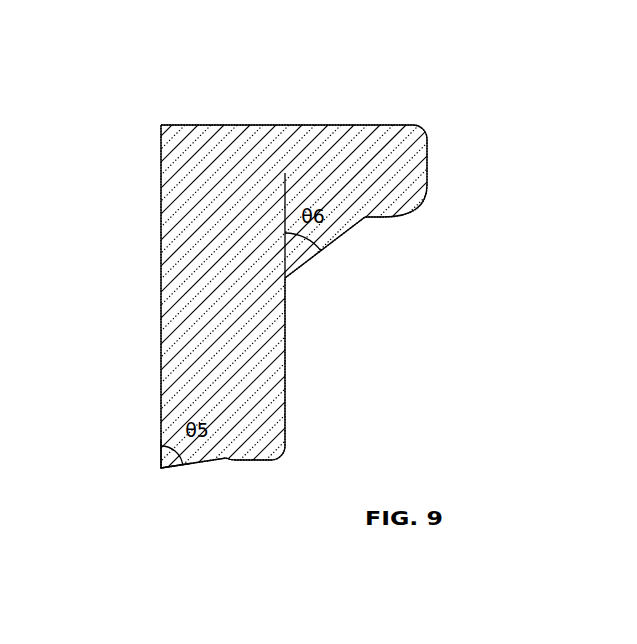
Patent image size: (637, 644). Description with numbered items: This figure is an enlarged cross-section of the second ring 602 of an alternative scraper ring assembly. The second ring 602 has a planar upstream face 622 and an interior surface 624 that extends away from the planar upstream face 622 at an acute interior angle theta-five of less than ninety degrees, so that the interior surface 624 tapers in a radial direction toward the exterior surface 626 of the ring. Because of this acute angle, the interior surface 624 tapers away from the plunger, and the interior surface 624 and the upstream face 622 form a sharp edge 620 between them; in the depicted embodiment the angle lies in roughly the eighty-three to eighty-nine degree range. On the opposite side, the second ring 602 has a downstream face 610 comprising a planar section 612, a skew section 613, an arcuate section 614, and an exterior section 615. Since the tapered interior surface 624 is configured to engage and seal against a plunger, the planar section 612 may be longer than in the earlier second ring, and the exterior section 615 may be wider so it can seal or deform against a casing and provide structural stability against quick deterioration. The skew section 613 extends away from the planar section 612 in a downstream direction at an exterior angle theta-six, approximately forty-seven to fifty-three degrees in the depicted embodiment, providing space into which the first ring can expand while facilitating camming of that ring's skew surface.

The second ring 602 is at (318, 281).
The downstream face 610 is at (377, 345).
The planar section 612 is at (298, 372).
The skew section 613 is at (325, 264).
The arcuate section 614 is at (397, 225).
The exterior section 615 is at (446, 168).
The sharp edge 620 is at (157, 482).
The planar upstream face 622 is at (146, 301).
The interior surface 624 is at (223, 477).
The exterior surface 626 is at (212, 110).